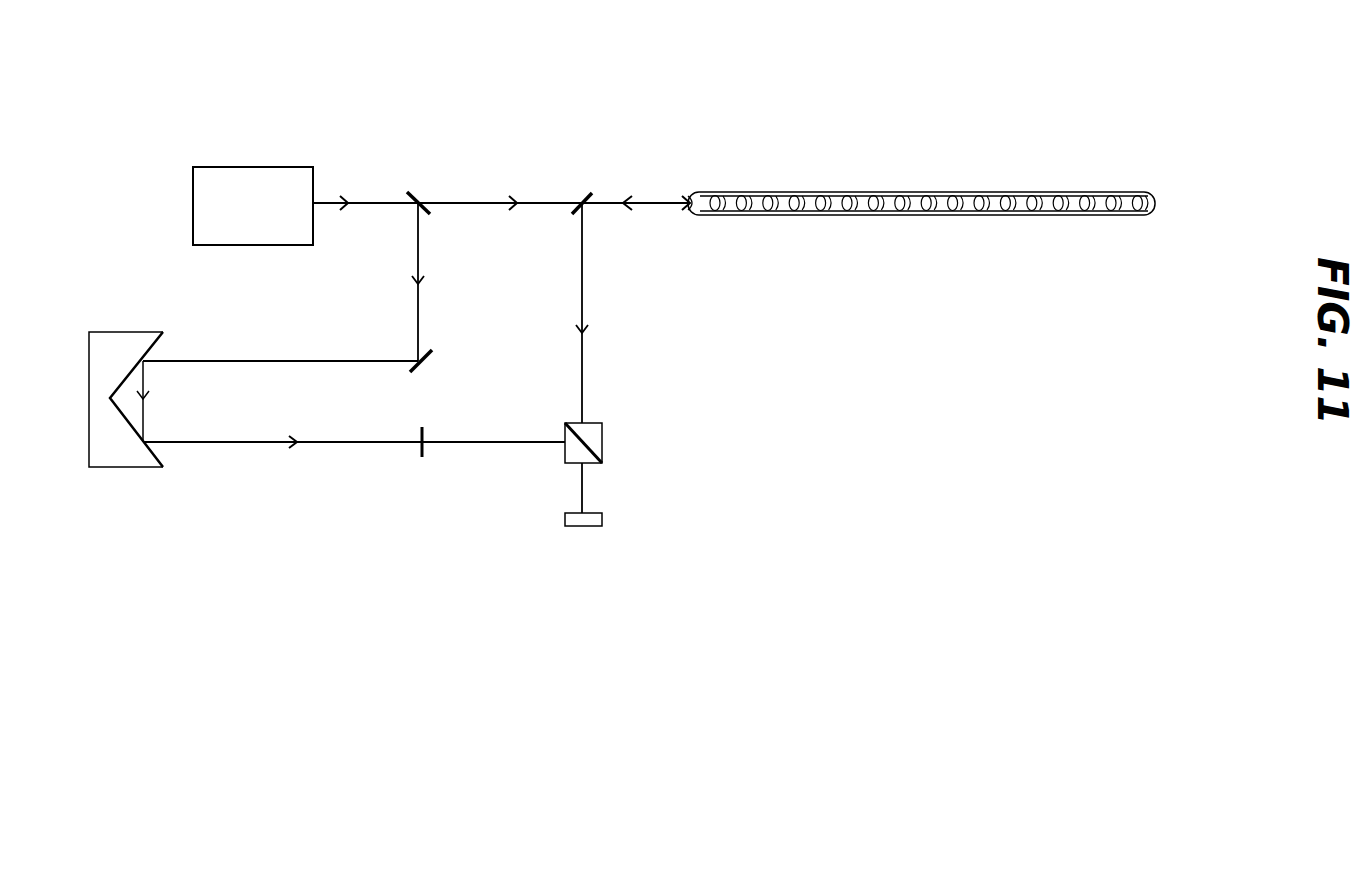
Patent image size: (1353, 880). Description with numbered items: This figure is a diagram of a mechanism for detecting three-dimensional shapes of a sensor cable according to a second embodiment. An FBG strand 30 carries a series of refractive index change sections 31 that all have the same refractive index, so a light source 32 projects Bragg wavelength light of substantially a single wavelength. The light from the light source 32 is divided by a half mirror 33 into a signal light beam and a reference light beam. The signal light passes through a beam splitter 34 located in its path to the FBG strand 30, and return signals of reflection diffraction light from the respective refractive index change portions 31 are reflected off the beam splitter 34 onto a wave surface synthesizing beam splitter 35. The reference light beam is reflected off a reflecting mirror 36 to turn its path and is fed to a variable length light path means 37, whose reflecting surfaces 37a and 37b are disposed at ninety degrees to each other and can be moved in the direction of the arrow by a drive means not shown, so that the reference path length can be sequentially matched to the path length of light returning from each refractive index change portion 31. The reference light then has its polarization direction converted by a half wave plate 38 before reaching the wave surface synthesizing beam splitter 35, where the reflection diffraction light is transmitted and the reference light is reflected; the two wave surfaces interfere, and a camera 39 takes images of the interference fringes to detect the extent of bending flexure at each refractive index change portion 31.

The FBG strand 30 is at (972, 192).
The refractive index change section 31 is at (755, 215).
The light source 32 is at (250, 168).
The half mirror 33 is at (413, 192).
The beam splitter 34 is at (590, 192).
The wave surface synthesizing beam splitter 35 is at (603, 440).
The reflecting mirror 36 is at (432, 353).
The variable length light path means 37 is at (118, 332).
The reflecting surface 37a is at (134, 360).
The reflecting surface 37b is at (142, 423).
The half wave plate 38 is at (422, 460).
The camera 39 is at (603, 520).